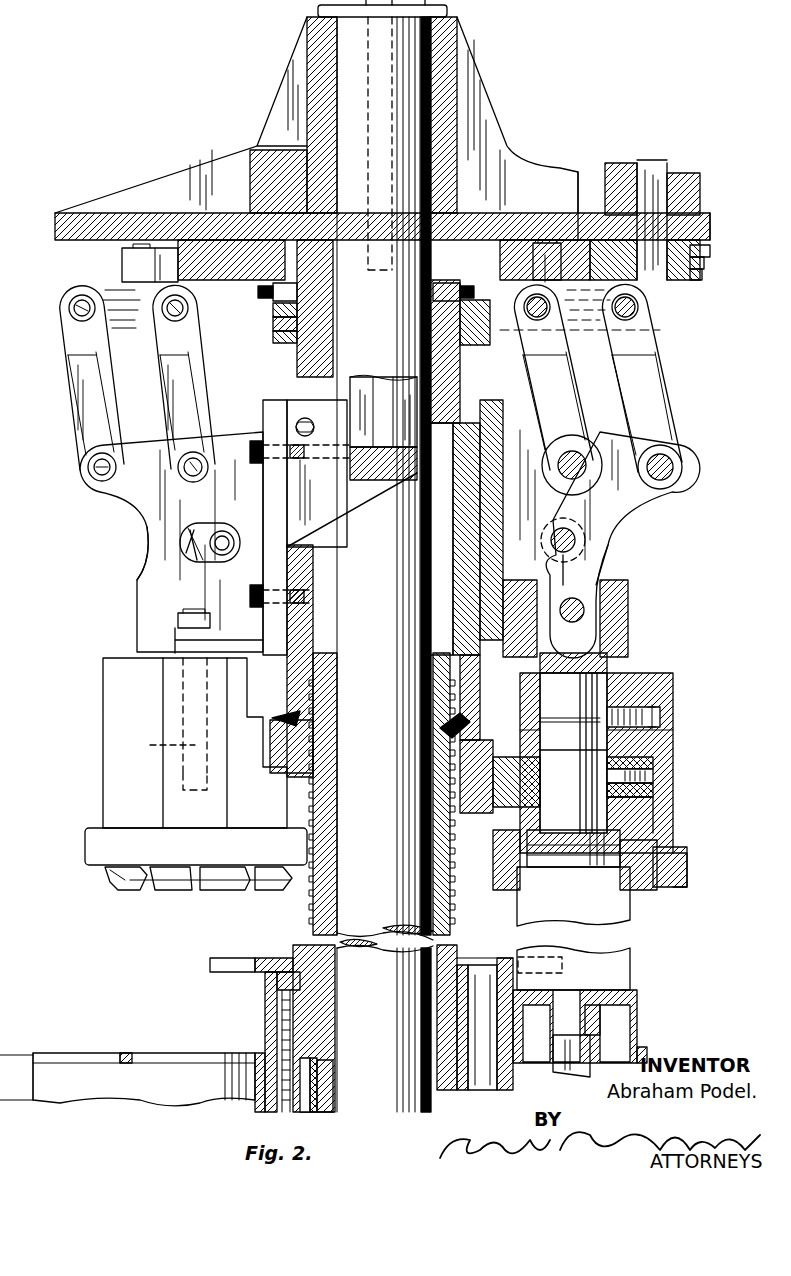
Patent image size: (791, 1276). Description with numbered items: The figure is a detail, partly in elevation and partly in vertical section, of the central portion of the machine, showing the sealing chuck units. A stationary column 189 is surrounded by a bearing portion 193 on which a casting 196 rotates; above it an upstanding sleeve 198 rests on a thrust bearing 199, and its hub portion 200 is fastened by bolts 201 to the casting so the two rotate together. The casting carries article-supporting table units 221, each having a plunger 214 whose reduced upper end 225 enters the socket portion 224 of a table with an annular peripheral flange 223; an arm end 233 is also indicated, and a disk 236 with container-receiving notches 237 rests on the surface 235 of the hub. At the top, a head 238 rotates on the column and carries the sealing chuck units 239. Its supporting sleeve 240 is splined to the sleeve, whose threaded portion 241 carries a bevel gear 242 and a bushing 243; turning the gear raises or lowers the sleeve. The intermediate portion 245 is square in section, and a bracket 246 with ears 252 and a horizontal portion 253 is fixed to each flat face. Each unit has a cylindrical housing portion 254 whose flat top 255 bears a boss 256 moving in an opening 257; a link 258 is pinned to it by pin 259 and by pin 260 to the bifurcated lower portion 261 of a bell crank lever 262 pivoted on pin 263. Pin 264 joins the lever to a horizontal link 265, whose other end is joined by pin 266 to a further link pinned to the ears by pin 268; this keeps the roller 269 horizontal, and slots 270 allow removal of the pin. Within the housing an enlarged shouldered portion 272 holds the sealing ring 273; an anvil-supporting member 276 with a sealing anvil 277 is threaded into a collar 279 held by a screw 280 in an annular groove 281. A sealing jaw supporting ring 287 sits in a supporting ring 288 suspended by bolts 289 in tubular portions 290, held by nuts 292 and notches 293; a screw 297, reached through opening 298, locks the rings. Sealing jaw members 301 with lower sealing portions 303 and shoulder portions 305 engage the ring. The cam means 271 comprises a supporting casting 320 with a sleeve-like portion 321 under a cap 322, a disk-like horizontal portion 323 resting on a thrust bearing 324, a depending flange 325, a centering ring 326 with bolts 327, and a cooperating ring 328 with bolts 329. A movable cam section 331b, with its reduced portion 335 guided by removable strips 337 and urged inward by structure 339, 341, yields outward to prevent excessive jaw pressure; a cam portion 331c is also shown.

The stationary column 189 is at (440, 670).
The bearing portion 193 is at (333, 1085).
The casting 196 is at (255, 1072).
The upstanding sleeve 198 is at (302, 803).
The thrust bearing 199 is at (318, 1068).
The hub portion 200 is at (265, 1006).
The bolts 201 is at (277, 982).
The plunger 214 is at (565, 1047).
The article-supporting table unit 221 is at (118, 1085).
The annular peripheral flange 223 is at (637, 1013).
The socket portion 224 is at (600, 1030).
The reduced upper end 225 is at (585, 990).
The arm end 233 is at (120, 1054).
The surface 235 is at (465, 958).
The disk 236 is at (280, 958).
The container-receiving notches 237 is at (248, 958).
The head 238 is at (134, 520).
The sealing chuck unit 239 is at (92, 721).
The supporting sleeve 240 is at (460, 367).
The threaded portion 241 is at (311, 903).
The bevel gear 242 is at (290, 745).
The bushing 243 is at (278, 720).
The intermediate portion 245 is at (495, 562).
The bracket 246 is at (254, 507).
The ears 252 is at (115, 480).
The horizontal portion 253 is at (195, 640).
The cylindrical housing portion 254 is at (673, 740).
The flat top 255 is at (607, 673).
The cylindrical boss 256 is at (600, 640).
The opening 257 is at (625, 612).
The link 258 is at (180, 552).
The transverse pin 259 is at (585, 605).
The pin 260 is at (575, 540).
The bifurcated lower portion 261 is at (205, 562).
The bell crank lever 262 is at (168, 378).
The transverse pin 263 is at (200, 460).
The transverse pin 264 is at (175, 322).
The horizontal link 265 is at (123, 298).
The pin 266 is at (76, 305).
The pin 268 is at (88, 464).
The roller 269 is at (150, 262).
The slots 270 is at (185, 547).
The cam means 271 is at (222, 203).
The enlarged shouldered portion 272 is at (85, 838).
The sealing ring 273 is at (676, 890).
The anvil-supporting member 276 is at (568, 752).
The sealing anvil 277 is at (583, 840).
The collar 279 is at (560, 700).
The screw 280 is at (660, 715).
The annular groove 281 is at (560, 717).
The sealing jaw supporting ring 287 is at (655, 790).
The supporting ring 288 is at (655, 762).
The bolts 289 is at (155, 743).
The tubular portions 290 is at (170, 677).
The nuts 292 is at (180, 617).
The notches 293 is at (515, 785).
The screw 297 is at (655, 775).
The opening 298 is at (665, 805).
The sealing jaw members 301 is at (78, 862).
The lower sealing portions 303 is at (175, 870).
The outwardly projecting shoulder portion 305 is at (118, 878).
The supporting casting 320 is at (272, 158).
The sleeve-like portion 321 is at (323, 60).
The cap 322 is at (318, 11).
The disk-like horizontal portion 323 is at (132, 215).
The thrust bearing 324 is at (455, 240).
The depending flange 325 is at (273, 310).
The centering ring 326 is at (333, 330).
The bolts 327 is at (273, 325).
The cooperating ring 328 is at (273, 340).
The bolts 329 is at (258, 292).
The movable cam section 331b is at (710, 283).
The plate 331c is at (710, 250).
The reduced portion 335 is at (595, 212).
The removable strips 337 is at (704, 263).
The yielding structure 339 is at (700, 173).
The yielding structure 341 is at (700, 182).